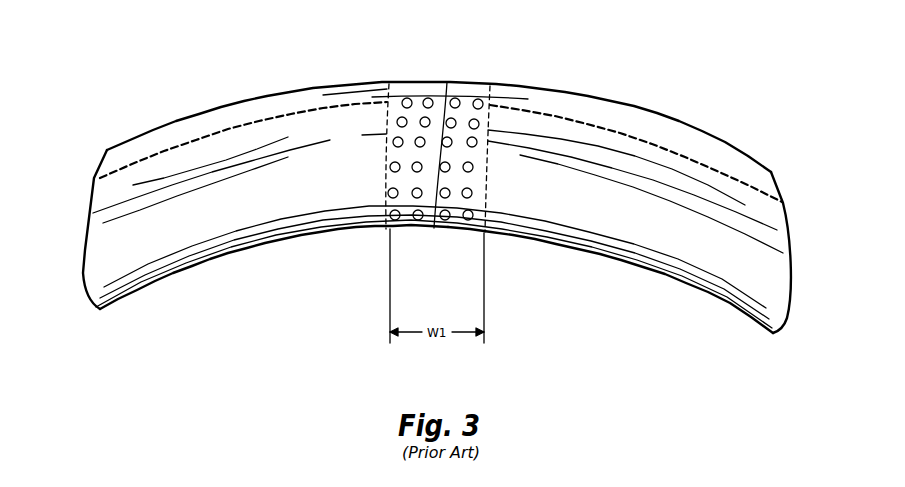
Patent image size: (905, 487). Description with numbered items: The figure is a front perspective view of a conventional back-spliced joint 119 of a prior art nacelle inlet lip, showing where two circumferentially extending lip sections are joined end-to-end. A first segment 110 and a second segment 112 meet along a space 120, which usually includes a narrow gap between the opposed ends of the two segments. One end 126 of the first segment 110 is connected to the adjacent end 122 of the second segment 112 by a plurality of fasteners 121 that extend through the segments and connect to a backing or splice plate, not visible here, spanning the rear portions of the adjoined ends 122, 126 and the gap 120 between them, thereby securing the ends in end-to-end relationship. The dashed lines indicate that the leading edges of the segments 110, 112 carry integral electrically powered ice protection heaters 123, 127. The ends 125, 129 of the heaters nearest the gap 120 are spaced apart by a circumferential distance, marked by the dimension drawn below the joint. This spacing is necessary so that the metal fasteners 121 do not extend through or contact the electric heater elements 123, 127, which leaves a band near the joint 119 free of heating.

The spliced joint 119 is at (626, 66).
The first inlet lip segment 110 is at (234, 248).
The second inlet lip segment 112 is at (633, 265).
The ice protection heater 127 is at (208, 153).
The ice protection heater 123 is at (652, 158).
The space 120 is at (447, 82).
The heater end 129 is at (384, 175).
The heater end 125 is at (485, 192).
The end of first segment 126 is at (415, 112).
The end of second segment 122 is at (471, 108).
The fasteners 121 is at (479, 121).